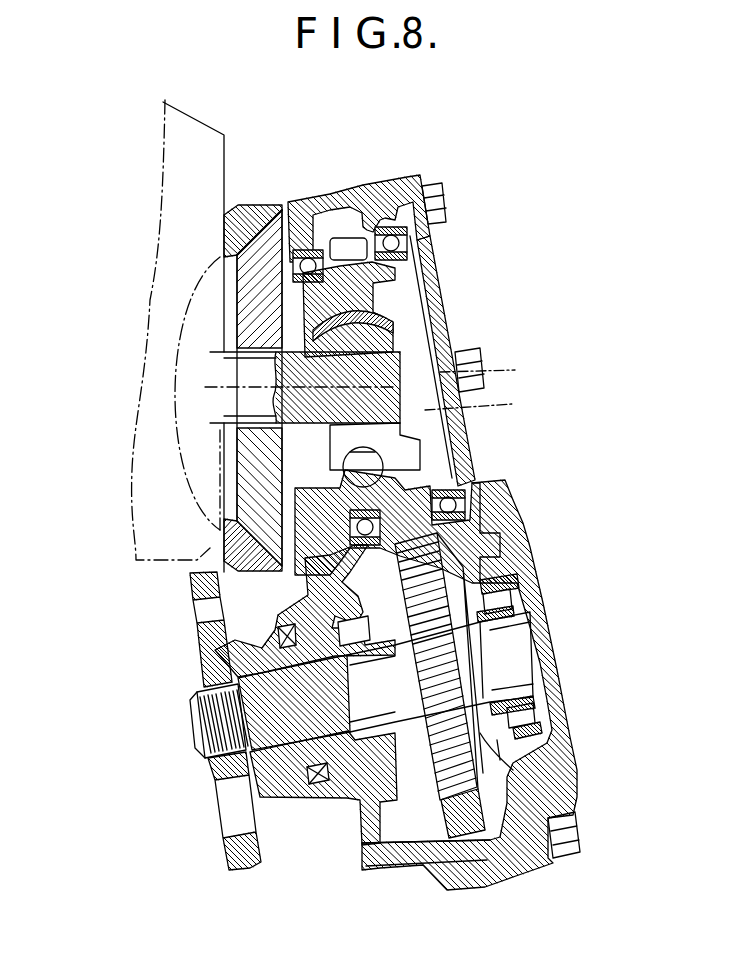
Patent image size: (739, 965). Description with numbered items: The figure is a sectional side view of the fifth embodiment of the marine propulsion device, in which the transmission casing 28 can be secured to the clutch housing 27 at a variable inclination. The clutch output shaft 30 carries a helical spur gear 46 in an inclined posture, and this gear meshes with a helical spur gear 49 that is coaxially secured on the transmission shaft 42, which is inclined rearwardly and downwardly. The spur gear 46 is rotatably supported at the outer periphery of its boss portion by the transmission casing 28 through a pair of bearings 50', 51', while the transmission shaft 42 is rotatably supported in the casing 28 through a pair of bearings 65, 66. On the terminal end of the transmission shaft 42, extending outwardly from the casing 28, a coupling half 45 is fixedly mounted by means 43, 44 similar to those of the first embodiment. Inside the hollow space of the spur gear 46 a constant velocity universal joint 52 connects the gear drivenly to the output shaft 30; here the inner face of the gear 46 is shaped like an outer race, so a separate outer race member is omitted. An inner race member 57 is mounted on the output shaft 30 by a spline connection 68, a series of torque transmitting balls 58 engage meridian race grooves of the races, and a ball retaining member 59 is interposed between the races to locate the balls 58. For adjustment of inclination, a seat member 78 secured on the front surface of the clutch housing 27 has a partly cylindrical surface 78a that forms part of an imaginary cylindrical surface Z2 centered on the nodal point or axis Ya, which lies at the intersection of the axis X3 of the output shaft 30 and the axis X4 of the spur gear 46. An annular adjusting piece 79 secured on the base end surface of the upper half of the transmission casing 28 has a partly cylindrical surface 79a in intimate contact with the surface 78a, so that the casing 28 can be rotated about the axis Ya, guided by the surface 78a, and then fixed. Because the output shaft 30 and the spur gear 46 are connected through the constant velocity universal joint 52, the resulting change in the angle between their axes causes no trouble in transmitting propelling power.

The clutch housing 27 is at (178, 124).
The transmission casing 28 is at (424, 856).
The clutch output shaft 30 is at (238, 402).
The transmission shaft 42 is at (300, 762).
The mounting means 43 is at (267, 668).
The mounting means 44 is at (225, 757).
The coupling half 45 is at (248, 870).
The spur gear 46 is at (347, 248).
The spur gear 49 is at (470, 823).
The bearing 50' is at (441, 232).
The bearing 51' is at (330, 504).
The constant velocity universal joint 52 is at (398, 322).
The inner race member 57 is at (367, 342).
The torque transmitting balls 58 is at (470, 480).
The ball retaining member 59 is at (427, 284).
The bearing 65 is at (495, 585).
The bearing 66 is at (383, 758).
The spline connection 68 is at (407, 428).
The seat member 78 is at (243, 203).
The partly cylindrical surface 78a is at (236, 528).
The annular adjusting piece 79 is at (243, 262).
The partly cylindrical surface 79a is at (268, 208).
The axis of the output shaft X3 is at (466, 401).
The axis of the spur gear X4 is at (478, 371).
The nodal point or axis Ya is at (302, 352).
The imaginary cylindrical surface Z2 is at (172, 370).